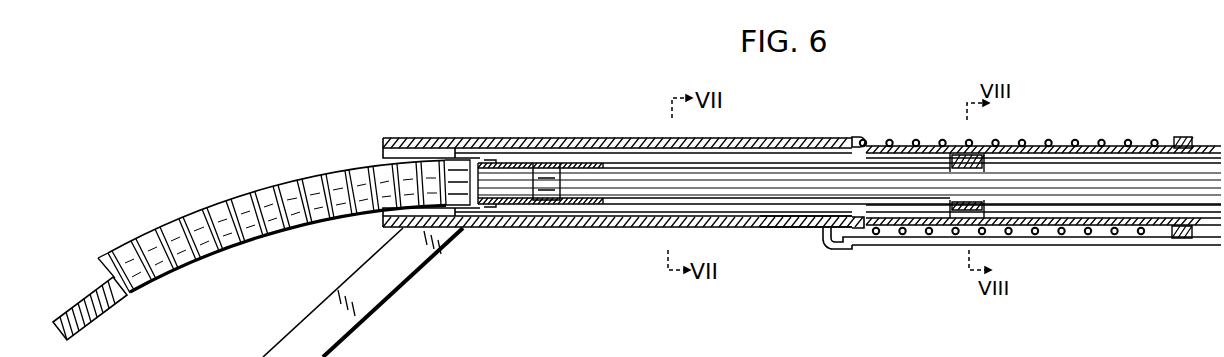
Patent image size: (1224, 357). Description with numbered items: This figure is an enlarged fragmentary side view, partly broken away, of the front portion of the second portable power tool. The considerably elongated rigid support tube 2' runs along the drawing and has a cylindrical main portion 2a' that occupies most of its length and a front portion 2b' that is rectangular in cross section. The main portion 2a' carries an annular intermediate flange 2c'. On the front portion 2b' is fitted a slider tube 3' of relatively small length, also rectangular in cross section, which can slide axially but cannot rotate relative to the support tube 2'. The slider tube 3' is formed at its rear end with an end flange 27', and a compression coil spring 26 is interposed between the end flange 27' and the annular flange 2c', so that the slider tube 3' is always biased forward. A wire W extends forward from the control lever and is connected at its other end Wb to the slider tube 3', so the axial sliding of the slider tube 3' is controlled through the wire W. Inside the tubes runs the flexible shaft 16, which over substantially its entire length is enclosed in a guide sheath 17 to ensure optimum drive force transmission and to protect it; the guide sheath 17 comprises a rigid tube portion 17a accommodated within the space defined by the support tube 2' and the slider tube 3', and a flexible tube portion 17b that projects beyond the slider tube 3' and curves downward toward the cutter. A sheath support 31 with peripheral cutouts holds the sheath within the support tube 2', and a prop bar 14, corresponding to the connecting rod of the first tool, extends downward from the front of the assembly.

The flexible tube portion 17b is at (243, 195).
The flexible shaft 16 is at (109, 304).
The prop bar 14 is at (374, 320).
The slider tube 3' is at (623, 153).
The front portion of support tube 2b' is at (806, 249).
The guide sheath 17 is at (753, 170).
The rigid tube portion 17a is at (793, 167).
The end flange 27' is at (872, 153).
The support tube 2' is at (1043, 153).
The main portion of support tube 2a' is at (910, 118).
The compression coil spring 26 is at (1023, 140).
The sheath support 31 is at (978, 162).
The annular intermediate flange 2c' is at (1183, 160).
The other end of wire Wb is at (848, 249).
The wire W is at (1100, 247).